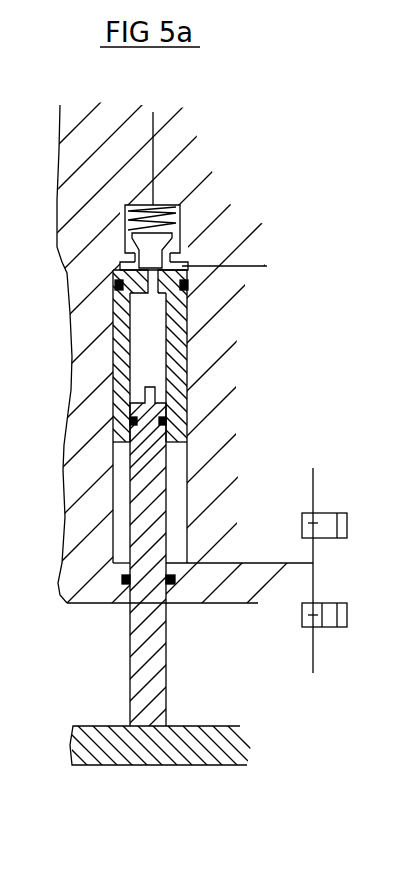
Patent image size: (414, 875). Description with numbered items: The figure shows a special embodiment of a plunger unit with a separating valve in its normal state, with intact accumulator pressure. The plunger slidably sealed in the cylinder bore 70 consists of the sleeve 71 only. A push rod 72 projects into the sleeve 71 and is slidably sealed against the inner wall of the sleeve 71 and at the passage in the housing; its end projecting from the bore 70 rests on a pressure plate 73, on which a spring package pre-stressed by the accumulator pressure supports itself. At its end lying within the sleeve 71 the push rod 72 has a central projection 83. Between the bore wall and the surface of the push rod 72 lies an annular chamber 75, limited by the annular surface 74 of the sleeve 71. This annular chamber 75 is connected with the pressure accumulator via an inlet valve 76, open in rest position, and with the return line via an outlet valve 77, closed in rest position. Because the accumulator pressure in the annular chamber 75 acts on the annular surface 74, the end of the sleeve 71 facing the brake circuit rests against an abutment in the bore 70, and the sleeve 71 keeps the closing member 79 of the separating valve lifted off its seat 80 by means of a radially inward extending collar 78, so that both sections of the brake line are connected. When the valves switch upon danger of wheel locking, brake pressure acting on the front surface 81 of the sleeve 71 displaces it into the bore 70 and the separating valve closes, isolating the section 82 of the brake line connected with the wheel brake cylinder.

The bore 70 is at (202, 431).
The sleeve 71 is at (122, 368).
The push rod 72 is at (128, 548).
The pressure plate 73 is at (130, 757).
The annular surface 74 is at (168, 443).
The annular chamber 75 is at (128, 531).
The inlet valve 76 is at (322, 620).
The outlet valve 77 is at (315, 528).
The collar 78 is at (162, 279).
The closing member 79 is at (156, 243).
The seat 80 is at (135, 257).
The front surface 81 is at (182, 262).
The section of the brake line 82 is at (240, 266).
The central projection 83 is at (131, 419).